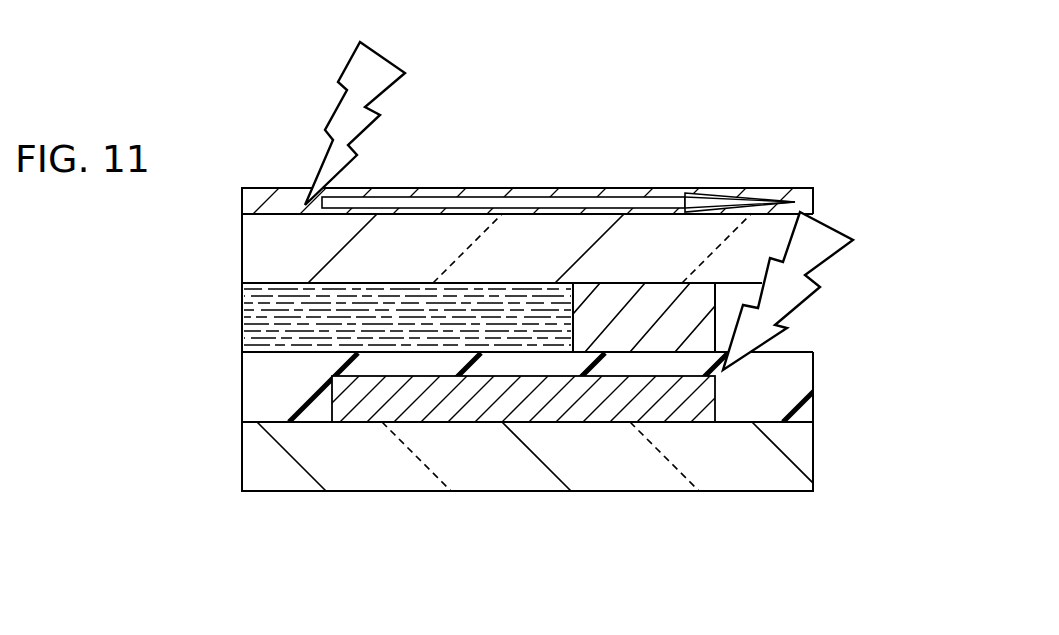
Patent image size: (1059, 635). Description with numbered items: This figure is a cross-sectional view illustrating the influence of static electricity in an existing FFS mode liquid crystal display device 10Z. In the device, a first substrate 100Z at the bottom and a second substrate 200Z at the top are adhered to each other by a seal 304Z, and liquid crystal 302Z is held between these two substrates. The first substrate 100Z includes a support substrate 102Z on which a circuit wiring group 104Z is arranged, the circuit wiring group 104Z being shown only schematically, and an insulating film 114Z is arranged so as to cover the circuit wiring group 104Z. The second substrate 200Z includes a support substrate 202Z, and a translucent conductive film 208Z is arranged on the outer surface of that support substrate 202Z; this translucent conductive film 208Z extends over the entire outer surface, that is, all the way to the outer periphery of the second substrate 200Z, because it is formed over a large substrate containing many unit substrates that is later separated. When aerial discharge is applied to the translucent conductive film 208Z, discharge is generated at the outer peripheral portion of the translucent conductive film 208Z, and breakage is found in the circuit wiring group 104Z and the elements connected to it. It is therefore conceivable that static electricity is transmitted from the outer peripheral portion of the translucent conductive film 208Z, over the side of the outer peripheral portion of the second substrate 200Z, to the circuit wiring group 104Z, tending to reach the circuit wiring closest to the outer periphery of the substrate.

The FFS mode liquid crystal display device 10Z is at (712, 108).
The first substrate 100Z is at (780, 508).
The support substrate 102Z is at (267, 470).
The circuit wiring group 104Z is at (463, 410).
The insulating film 114Z is at (794, 388).
The second substrate 200Z is at (777, 170).
The support substrate 202Z is at (262, 258).
The translucent conductive film 208Z is at (288, 200).
The liquid crystal 302Z is at (257, 323).
The seal 304Z is at (618, 337).